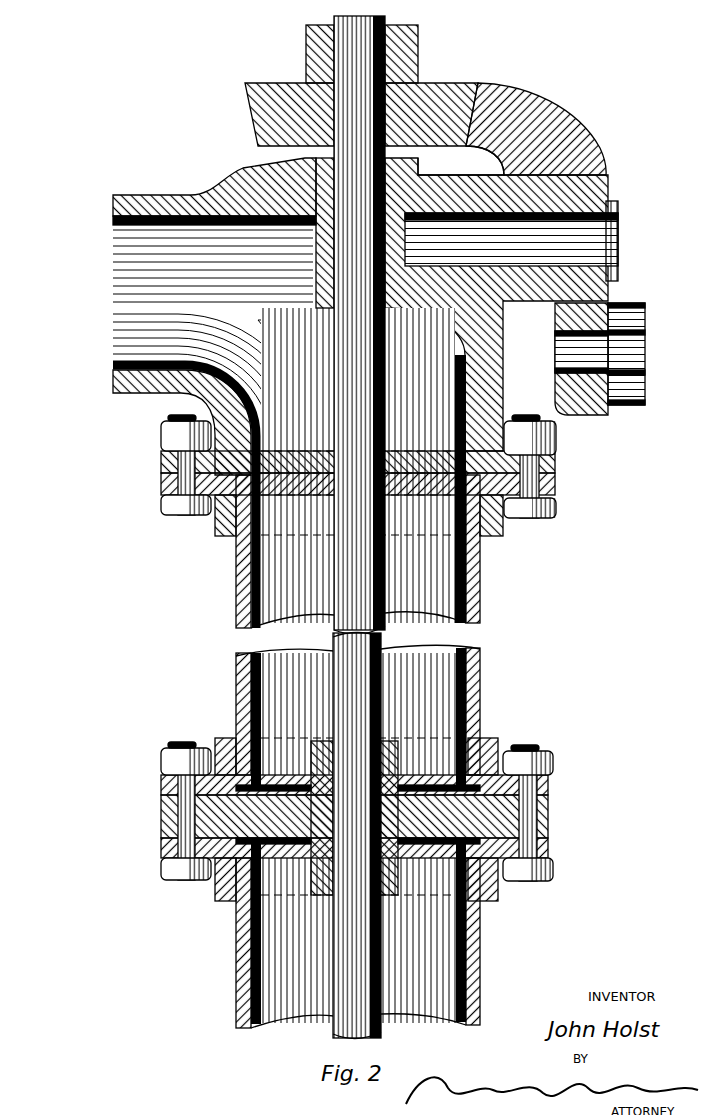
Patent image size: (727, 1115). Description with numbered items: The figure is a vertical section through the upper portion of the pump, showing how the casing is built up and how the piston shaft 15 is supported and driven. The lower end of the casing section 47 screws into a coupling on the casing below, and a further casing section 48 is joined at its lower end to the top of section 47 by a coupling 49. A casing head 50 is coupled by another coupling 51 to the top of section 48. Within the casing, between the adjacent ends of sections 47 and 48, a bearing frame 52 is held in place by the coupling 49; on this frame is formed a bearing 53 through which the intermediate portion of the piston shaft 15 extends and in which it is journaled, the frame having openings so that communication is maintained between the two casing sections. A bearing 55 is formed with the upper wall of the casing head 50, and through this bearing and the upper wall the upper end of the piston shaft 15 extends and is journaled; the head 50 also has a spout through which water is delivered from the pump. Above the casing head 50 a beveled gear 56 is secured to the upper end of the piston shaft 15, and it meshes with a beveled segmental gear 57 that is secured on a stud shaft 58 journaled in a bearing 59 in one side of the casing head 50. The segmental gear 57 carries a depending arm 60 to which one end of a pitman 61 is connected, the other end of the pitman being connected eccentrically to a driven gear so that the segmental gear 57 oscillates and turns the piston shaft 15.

The shaft 15 is at (377, 600).
The casing section 47 is at (472, 955).
The casing section 48 is at (473, 658).
The coupling 49 is at (332, 801).
The casing head 50 is at (70, 272).
The coupling 51 is at (373, 475).
The bearing frame 52 is at (545, 808).
The bearing 53 is at (393, 743).
The bearing 55 is at (318, 272).
The beveled gear 56 is at (240, 105).
The beveled segmental gear 57 is at (473, 105).
The stud shaft 58 is at (575, 237).
The bearing 59 is at (458, 170).
The depending arm 60 is at (582, 395).
The pitman 61 is at (637, 344).